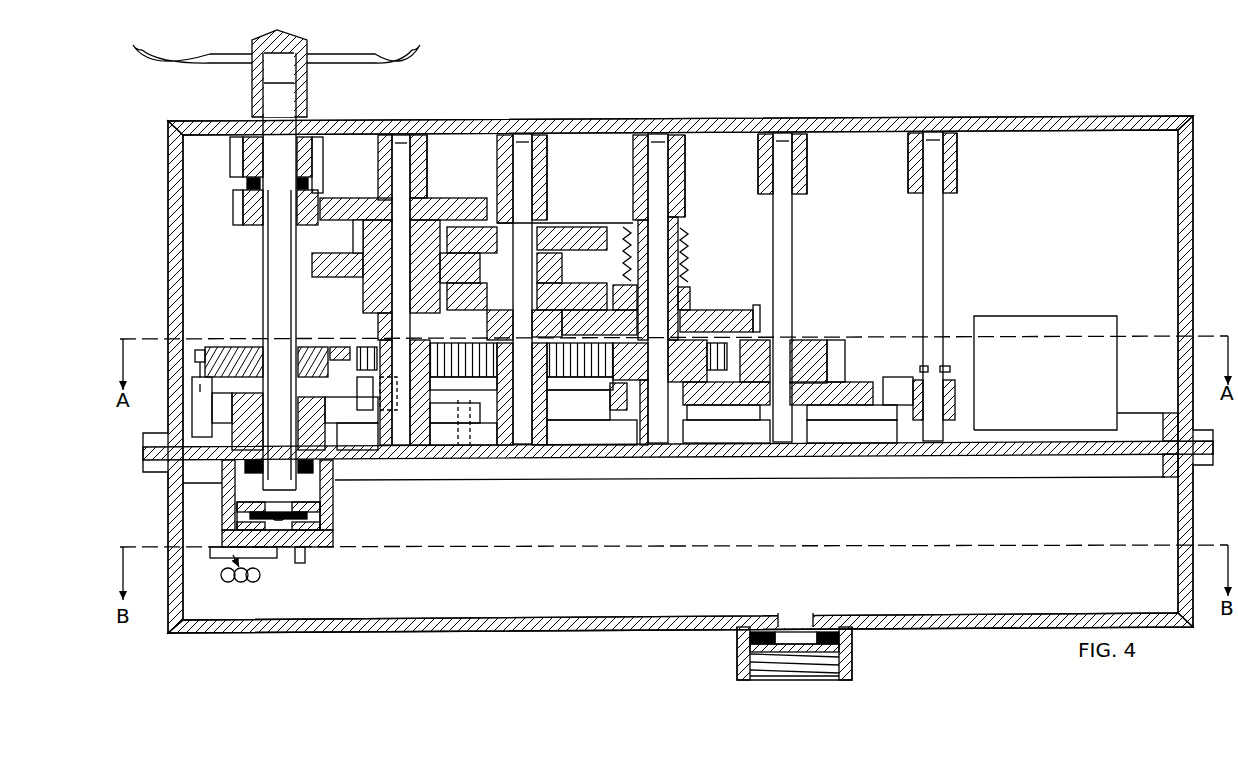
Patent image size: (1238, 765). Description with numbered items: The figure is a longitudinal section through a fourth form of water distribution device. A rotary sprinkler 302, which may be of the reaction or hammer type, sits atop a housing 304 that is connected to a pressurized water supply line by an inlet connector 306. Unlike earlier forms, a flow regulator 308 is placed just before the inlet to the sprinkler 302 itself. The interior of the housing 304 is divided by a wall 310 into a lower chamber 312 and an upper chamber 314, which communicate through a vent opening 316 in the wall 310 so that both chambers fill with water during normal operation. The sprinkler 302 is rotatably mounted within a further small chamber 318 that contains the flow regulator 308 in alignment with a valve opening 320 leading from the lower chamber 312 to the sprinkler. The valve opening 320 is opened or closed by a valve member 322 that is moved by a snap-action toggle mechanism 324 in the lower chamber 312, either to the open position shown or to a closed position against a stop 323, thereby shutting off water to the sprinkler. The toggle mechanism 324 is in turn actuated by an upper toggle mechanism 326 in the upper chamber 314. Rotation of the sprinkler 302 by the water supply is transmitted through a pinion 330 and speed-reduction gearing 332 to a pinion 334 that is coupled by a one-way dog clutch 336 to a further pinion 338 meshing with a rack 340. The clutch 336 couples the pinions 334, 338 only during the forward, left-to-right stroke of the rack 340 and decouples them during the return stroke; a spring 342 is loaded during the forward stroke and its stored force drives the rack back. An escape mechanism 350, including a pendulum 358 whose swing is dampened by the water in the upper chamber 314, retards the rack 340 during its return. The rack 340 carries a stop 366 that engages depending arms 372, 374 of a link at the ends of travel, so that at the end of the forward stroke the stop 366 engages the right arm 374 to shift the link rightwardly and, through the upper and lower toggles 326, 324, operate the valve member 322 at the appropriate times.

The rotary sprinkler 302 is at (355, 72).
The housing 304 is at (581, 130).
The inlet connector 306 is at (846, 656).
The flow regulator 308 is at (322, 514).
The wall 310 is at (616, 457).
The lower chamber 312 is at (708, 581).
The upper chamber 314 is at (873, 254).
The vent opening 316 is at (376, 456).
The small chamber 318 is at (320, 489).
The valve opening 320 is at (284, 565).
The valve member 322 is at (252, 588).
The stop 323 is at (304, 562).
The snap-action toggle mechanism 324 is at (215, 577).
The upper toggle mechanism 326 is at (193, 352).
The pinion 330 is at (250, 228).
The speed-reduction gearing 332 is at (486, 176).
The pinion 334 is at (706, 310).
The one-way dog clutch 336 is at (739, 312).
The pinion 338 is at (696, 400).
The rack 340 is at (614, 310).
The spring 342 is at (244, 347).
The escape mechanism 350 is at (856, 366).
The pendulum 358 is at (1054, 325).
The stop 366 is at (426, 467).
The depending arm 372 is at (350, 352).
The depending arm 374 is at (514, 392).